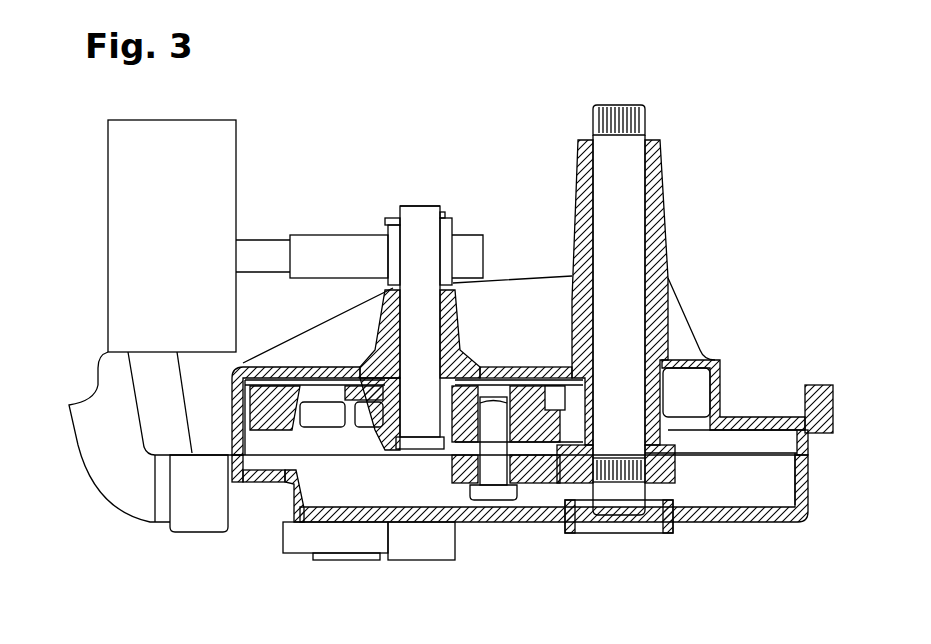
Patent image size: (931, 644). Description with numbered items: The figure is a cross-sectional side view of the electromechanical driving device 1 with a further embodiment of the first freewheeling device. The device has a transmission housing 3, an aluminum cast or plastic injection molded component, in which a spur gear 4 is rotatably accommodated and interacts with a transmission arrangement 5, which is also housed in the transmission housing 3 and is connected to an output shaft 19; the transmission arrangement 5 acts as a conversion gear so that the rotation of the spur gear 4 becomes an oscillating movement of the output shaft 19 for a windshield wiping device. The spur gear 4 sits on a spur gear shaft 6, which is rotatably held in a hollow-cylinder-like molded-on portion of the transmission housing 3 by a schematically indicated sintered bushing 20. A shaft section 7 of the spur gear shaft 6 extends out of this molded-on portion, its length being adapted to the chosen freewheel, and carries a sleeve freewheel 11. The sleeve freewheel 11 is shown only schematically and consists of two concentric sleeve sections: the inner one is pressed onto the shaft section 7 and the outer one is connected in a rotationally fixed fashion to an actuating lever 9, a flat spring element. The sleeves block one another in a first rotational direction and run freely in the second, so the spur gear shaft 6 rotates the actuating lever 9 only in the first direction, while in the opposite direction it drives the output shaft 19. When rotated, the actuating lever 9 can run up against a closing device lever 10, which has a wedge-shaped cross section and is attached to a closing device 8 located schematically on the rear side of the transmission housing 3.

The electromechanical driving device 1 is at (90, 254).
The transmission housing 3 is at (660, 266).
The spur gear 4 is at (537, 447).
The transmission arrangement 5 is at (457, 470).
The spur gear shaft 6 is at (420, 248).
The shaft section 7 is at (450, 209).
The closing device 8 is at (186, 150).
The actuating lever 9 is at (335, 250).
The closing device lever 10 is at (248, 262).
The sleeve freewheel 11 is at (395, 237).
The output shaft 19 is at (622, 147).
The sintered bushing 20 is at (455, 305).